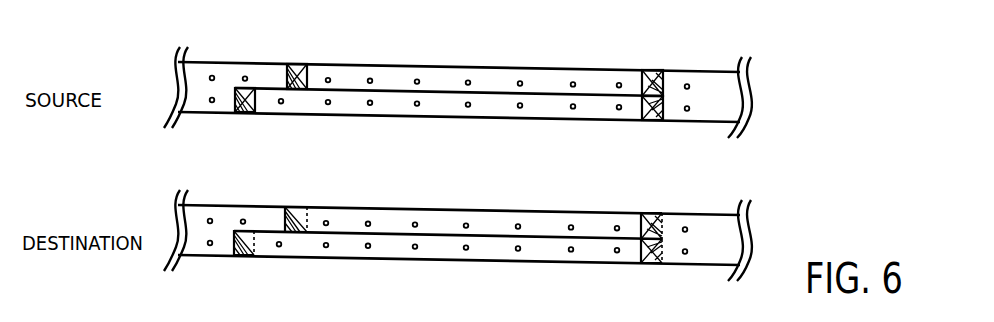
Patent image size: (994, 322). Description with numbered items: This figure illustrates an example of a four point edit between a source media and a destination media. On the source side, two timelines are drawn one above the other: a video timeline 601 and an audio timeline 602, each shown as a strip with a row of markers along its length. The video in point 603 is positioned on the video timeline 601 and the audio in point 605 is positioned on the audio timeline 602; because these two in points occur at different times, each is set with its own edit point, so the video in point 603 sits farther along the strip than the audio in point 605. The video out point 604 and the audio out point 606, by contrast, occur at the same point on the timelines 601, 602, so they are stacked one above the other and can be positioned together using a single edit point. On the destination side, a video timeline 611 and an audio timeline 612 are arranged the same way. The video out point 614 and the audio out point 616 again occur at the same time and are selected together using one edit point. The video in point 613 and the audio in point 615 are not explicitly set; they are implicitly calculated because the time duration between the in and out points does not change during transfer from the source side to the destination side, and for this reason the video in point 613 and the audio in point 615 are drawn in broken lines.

The video timeline 601 is at (443, 67).
The audio timeline 602 is at (436, 110).
The video in point 603 is at (303, 62).
The video out point 604 is at (650, 72).
The audio in point 605 is at (243, 110).
The audio out point 606 is at (654, 120).
The video timeline 611 is at (393, 210).
The audio timeline 612 is at (388, 252).
The video in point 613 is at (303, 206).
The video out point 614 is at (648, 215).
The audio in point 615 is at (245, 254).
The audio out point 616 is at (655, 264).